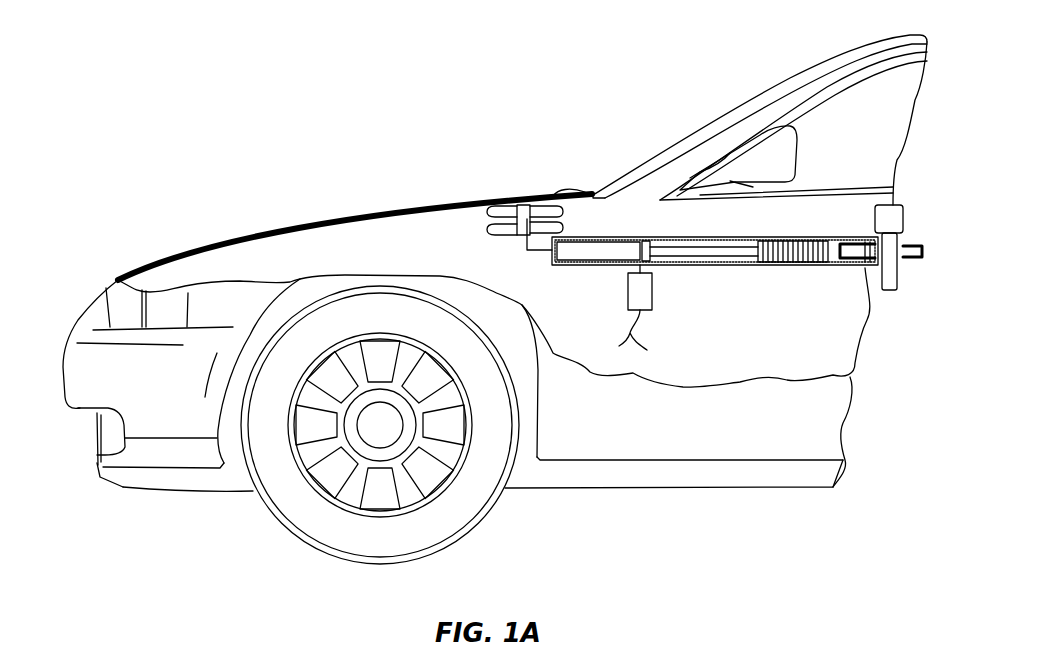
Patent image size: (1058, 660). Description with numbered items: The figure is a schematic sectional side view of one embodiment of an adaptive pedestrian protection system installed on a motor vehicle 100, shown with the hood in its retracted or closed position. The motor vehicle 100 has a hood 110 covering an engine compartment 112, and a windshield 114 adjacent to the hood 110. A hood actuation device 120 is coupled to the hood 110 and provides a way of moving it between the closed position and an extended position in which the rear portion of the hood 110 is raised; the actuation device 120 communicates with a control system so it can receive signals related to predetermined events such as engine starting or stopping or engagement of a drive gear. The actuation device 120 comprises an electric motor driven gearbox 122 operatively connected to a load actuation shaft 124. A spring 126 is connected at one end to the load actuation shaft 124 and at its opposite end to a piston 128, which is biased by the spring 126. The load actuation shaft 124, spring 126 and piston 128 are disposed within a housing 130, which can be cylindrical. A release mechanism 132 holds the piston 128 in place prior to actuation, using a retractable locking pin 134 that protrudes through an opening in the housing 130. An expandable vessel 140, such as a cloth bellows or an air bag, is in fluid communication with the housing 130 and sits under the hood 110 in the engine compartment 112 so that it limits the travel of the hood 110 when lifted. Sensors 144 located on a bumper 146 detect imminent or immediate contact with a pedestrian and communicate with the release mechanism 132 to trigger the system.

The motor vehicle 100 is at (385, 152).
The hood 110 is at (412, 212).
The engine compartment 112 is at (308, 250).
The windshield 114 is at (710, 122).
The hood actuation device 120 is at (812, 218).
The electric motor driven gearbox 122 is at (898, 218).
The load actuation shaft 124 is at (863, 268).
The spring 126 is at (778, 267).
The piston 128 is at (685, 250).
The housing 130 is at (592, 267).
The release mechanism 132 is at (652, 297).
The retractable locking pin 134 is at (642, 268).
The expandable vessel 140 is at (520, 212).
The sensors 144 is at (118, 276).
The bumper 146 is at (85, 397).